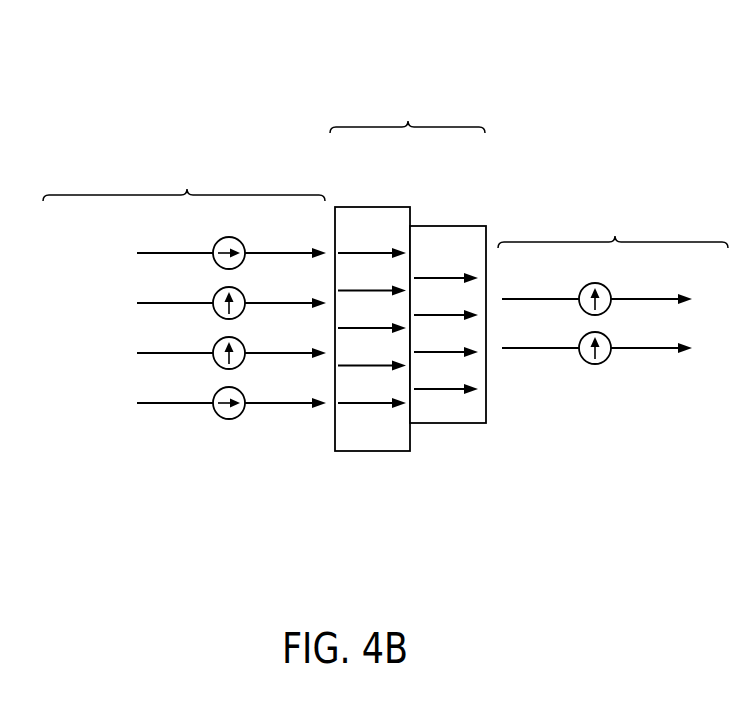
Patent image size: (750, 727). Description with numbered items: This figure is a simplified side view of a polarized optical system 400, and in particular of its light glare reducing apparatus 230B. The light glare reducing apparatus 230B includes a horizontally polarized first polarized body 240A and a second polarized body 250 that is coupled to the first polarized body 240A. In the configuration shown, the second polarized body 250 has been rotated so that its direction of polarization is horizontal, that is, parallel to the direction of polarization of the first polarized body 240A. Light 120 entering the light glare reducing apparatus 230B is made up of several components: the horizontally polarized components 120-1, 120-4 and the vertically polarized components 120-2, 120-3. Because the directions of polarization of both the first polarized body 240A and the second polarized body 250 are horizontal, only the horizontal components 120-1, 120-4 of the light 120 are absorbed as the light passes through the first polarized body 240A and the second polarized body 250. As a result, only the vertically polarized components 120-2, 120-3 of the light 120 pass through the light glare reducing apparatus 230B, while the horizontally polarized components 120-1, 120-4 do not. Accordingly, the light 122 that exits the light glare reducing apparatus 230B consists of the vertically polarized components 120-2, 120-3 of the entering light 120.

The polarized optical system 400 is at (196, 62).
The light 120 is at (184, 179).
The horizontally polarized component 120-1 is at (157, 252).
The vertically polarized component 120-2 is at (157, 302).
The vertically polarized component 120-3 is at (157, 352).
The horizontally polarized component 120-4 is at (157, 402).
The light glare reducing apparatus 230B is at (408, 301).
The first polarized body 240A is at (373, 451).
The second polarized body 250 is at (450, 226).
The light 122 is at (613, 220).